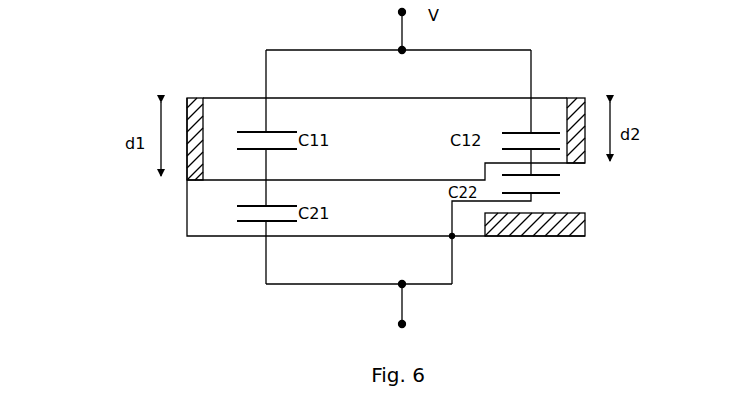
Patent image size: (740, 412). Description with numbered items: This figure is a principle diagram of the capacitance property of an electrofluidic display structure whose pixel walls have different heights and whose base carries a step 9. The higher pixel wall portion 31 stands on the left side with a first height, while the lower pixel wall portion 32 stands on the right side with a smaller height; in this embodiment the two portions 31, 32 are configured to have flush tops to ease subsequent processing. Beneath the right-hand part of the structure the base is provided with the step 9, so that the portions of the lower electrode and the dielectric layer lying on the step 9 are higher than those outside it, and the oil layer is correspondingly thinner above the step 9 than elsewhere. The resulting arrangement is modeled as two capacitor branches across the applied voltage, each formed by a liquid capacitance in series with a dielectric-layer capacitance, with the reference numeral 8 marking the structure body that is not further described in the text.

The dielectric body 8 is at (200, 213).
The step 9 is at (550, 230).
The higher pixel wall portion 31 is at (196, 96).
The lower pixel wall portion 32 is at (582, 94).